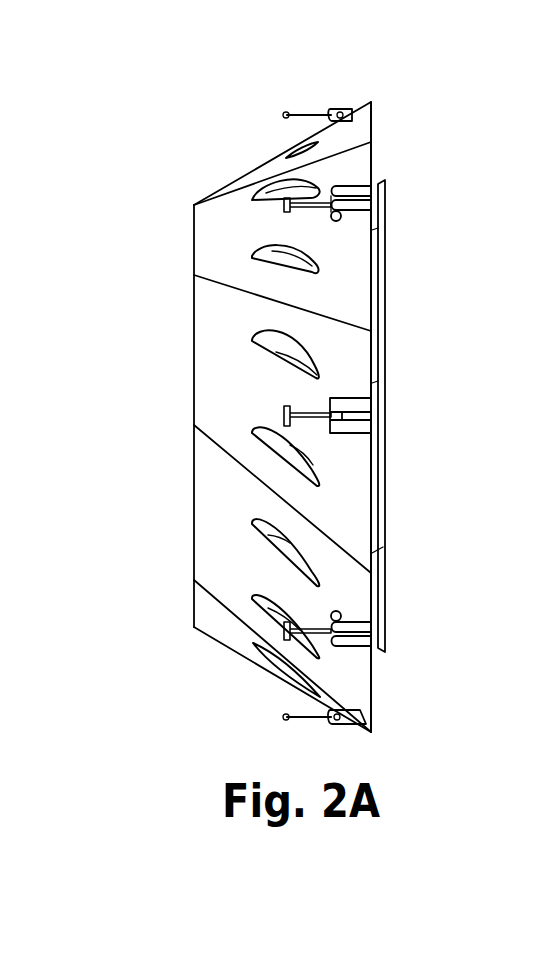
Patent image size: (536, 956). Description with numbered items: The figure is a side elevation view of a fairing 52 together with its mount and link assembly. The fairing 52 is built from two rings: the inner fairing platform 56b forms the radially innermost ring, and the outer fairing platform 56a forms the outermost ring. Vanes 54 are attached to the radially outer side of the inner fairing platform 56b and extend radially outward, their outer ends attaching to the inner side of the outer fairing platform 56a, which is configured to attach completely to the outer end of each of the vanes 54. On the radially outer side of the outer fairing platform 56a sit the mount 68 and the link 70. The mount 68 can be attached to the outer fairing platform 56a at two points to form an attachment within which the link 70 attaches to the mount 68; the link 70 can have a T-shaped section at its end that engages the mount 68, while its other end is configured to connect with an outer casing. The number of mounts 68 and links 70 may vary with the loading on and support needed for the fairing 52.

The fairing 52 is at (440, 128).
The vanes 54 is at (265, 532).
The outer fairing platform 56a is at (228, 245).
The inner fairing platform 56b is at (380, 310).
The mount 68 is at (347, 106).
The link 70 is at (296, 110).